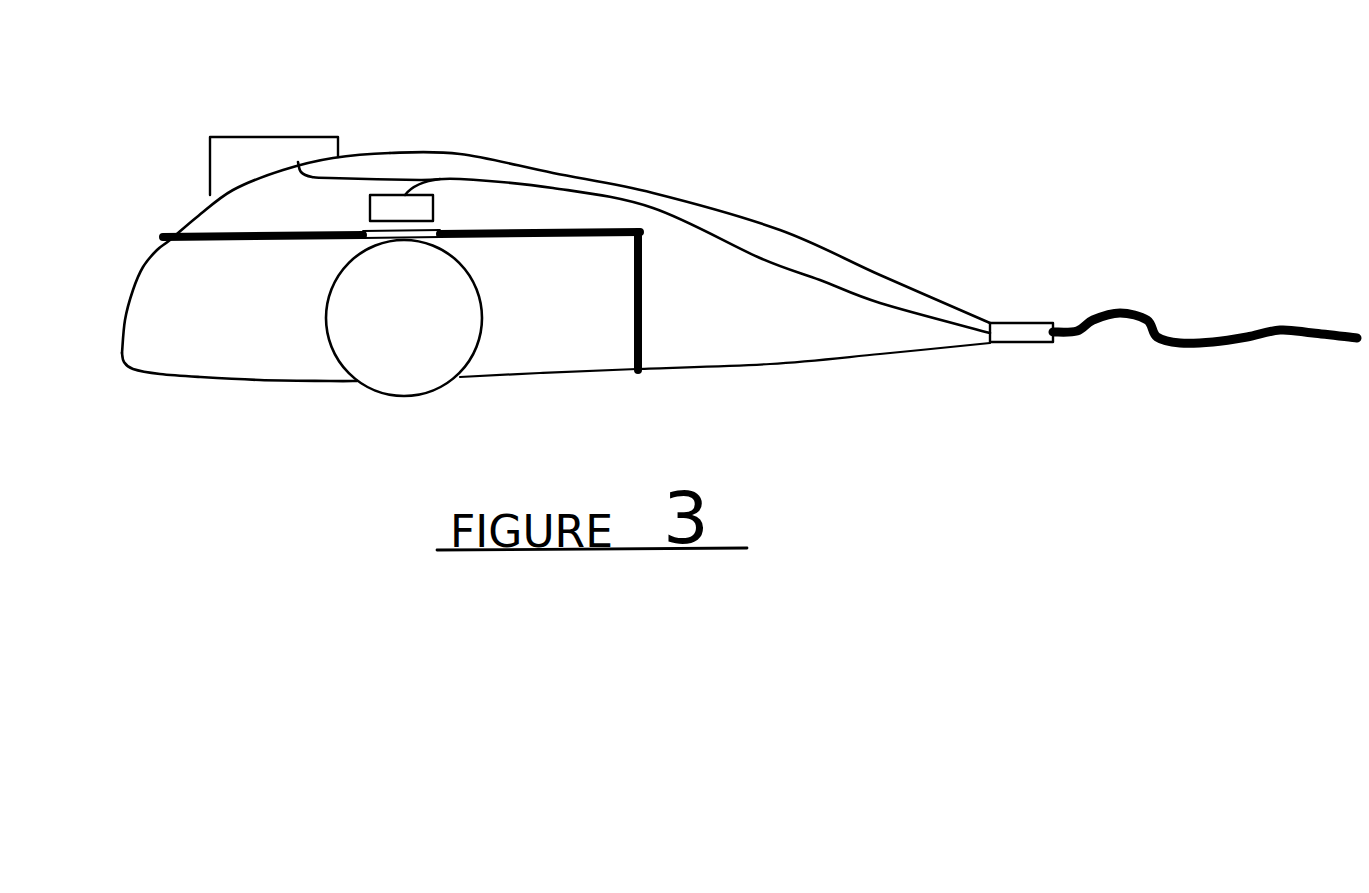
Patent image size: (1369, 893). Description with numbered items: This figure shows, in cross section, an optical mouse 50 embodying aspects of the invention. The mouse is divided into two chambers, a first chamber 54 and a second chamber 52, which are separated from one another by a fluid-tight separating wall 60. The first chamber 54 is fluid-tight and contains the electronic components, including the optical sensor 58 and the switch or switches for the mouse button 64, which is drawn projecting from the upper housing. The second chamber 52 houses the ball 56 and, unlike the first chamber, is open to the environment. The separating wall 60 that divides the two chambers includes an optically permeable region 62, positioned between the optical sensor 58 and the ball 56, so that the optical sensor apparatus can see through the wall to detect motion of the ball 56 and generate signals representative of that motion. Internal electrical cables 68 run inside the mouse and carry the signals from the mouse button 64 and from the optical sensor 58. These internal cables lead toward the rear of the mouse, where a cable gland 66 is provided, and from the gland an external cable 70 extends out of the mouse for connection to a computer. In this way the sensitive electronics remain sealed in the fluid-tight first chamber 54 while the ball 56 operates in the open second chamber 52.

The optical mouse 50 is at (143, 109).
The second chamber 52 is at (237, 345).
The first chamber 54 is at (550, 178).
The ball 56 is at (393, 378).
The optical sensor 58 is at (380, 209).
The separating wall 60 is at (190, 234).
The optically permeable region 62 is at (433, 237).
The mouse button 64 is at (290, 147).
The cable gland 66 is at (1027, 330).
The internal electrical cables 68 is at (750, 257).
The external cable 70 is at (1170, 350).